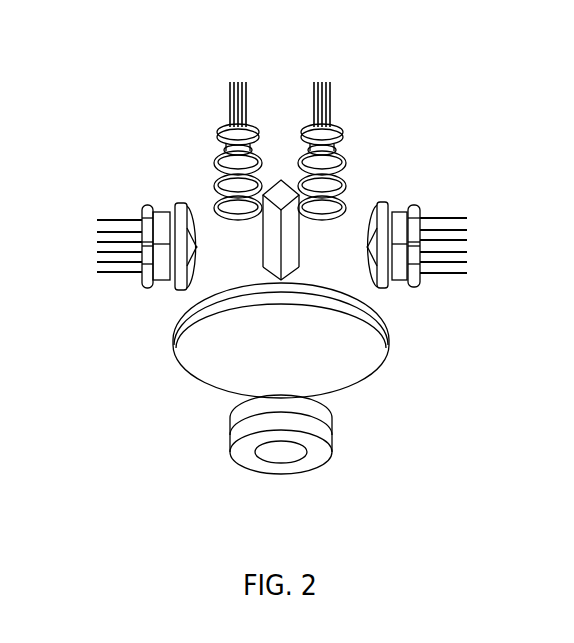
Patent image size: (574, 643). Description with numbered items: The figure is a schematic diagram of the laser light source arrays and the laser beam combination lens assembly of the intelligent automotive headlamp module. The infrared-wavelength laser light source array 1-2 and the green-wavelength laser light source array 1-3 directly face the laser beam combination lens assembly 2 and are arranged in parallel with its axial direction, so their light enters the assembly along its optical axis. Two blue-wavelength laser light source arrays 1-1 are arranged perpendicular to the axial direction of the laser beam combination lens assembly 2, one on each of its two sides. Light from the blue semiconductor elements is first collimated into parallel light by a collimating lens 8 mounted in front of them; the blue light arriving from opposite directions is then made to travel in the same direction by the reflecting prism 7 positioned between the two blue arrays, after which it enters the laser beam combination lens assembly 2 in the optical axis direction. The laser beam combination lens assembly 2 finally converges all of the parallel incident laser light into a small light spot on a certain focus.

The blue-wavelength laser light source array 1-1 is at (141, 208).
The infrared-wavelength laser light source array 1-2 is at (223, 126).
The green-wavelength laser light source array 1-3 is at (337, 126).
The laser beam combination lens assembly 2 is at (240, 433).
The reflecting prism 7 is at (281, 192).
The collimating lens 8 is at (378, 210).